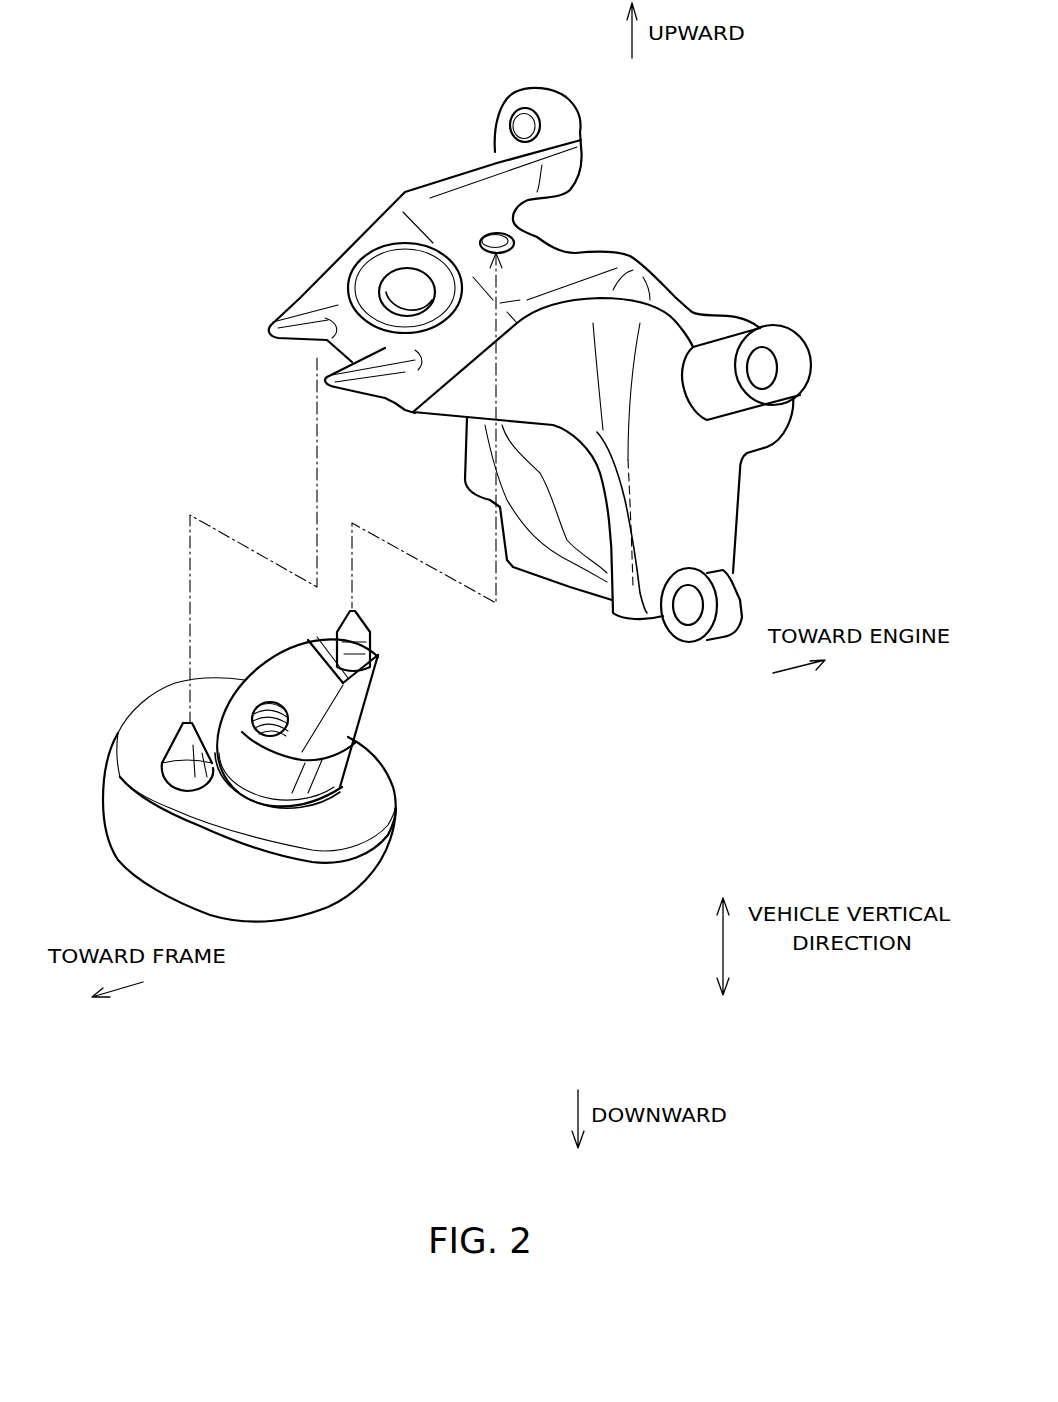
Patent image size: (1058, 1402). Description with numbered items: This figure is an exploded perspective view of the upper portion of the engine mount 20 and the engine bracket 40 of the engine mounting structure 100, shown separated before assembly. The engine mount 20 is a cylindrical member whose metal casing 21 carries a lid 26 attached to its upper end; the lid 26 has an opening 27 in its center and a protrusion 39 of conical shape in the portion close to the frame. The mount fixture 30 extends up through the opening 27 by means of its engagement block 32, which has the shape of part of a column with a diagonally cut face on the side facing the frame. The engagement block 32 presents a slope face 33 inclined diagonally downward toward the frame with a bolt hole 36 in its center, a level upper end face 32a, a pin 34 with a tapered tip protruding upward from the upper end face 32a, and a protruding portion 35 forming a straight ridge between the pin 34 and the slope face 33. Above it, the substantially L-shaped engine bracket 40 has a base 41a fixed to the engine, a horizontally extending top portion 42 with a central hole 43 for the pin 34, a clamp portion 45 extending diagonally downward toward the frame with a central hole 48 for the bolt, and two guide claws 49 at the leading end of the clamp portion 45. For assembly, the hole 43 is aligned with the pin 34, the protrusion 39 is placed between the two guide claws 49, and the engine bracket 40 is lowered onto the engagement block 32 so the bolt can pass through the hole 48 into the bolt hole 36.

The engine mounting structure 100 is at (254, 150).
The engine mount 20 is at (367, 949).
The casing 21 is at (383, 857).
The lid 26 is at (393, 820).
The opening 27 is at (340, 800).
The mount fixture 30 is at (362, 741).
The engagement block 32 is at (340, 770).
The upper end face 32a is at (368, 663).
The slope face 33 is at (282, 683).
The pin 34 is at (366, 633).
The protruding portion 35 is at (292, 652).
The bolt hole 36 is at (255, 735).
The protrusion 39 is at (175, 747).
The engine bracket 40 is at (666, 247).
The base 41a is at (790, 338).
The top portion 42 is at (477, 208).
The hole 43 is at (510, 237).
The clamp portion 45 is at (370, 248).
The hole 48 is at (403, 300).
The guide claws 49 is at (292, 323).